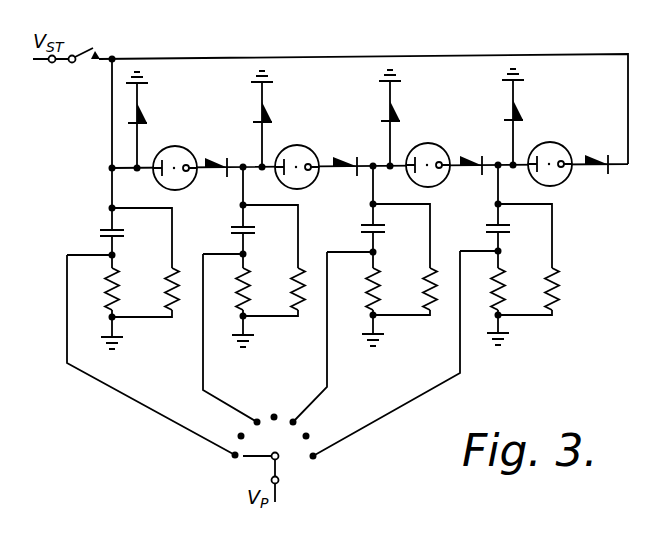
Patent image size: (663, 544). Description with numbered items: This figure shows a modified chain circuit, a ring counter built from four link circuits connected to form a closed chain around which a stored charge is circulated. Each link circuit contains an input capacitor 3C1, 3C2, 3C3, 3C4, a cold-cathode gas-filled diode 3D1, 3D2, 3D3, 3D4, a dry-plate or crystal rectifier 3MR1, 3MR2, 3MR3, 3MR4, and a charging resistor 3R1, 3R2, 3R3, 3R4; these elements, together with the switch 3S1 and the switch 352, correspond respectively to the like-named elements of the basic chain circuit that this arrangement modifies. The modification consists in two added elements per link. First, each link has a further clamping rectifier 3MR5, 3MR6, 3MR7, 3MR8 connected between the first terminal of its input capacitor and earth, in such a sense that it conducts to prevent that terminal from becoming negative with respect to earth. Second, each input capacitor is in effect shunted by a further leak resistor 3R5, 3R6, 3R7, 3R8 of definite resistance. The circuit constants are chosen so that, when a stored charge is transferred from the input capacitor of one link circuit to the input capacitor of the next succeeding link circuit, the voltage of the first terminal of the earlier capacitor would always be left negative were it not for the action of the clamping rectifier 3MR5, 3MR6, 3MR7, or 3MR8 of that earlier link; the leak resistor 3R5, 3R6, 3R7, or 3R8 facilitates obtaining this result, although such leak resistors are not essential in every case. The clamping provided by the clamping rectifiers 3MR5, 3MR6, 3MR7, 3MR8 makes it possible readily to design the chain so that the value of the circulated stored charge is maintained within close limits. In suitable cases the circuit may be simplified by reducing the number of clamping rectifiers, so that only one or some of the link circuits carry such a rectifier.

The switch 3S1 is at (74, 45).
The dry-plate or crystal rectifier 3MR1 is at (221, 179).
The dry-plate or crystal rectifier 3MR2 is at (348, 177).
The dry-plate or crystal rectifier 3MR3 is at (474, 176).
The dry-plate or crystal rectifier 3MR4 is at (600, 175).
The clamping rectifier 3MR5 is at (163, 120).
The clamping rectifier 3MR6 is at (289, 119).
The clamping rectifier 3MR7 is at (416, 118).
The clamping rectifier 3MR8 is at (540, 117).
The cold-cathode gas-filled diode 3D1 is at (175, 159).
The cold-cathode gas-filled diode 3D2 is at (297, 158).
The cold-cathode gas-filled diode 3D3 is at (428, 156).
The cold-cathode gas-filled diode 3D4 is at (550, 155).
The input capacitor 3C1 is at (134, 236).
The input capacitor 3C2 is at (262, 234).
The input capacitor 3C3 is at (392, 232).
The input capacitor 3C4 is at (517, 231).
The charging resistor 3R1 is at (96, 289).
The charging resistor 3R2 is at (228, 289).
The charging resistor 3R3 is at (355, 289).
The charging resistor 3R4 is at (483, 289).
The leak resistor 3R5 is at (154, 289).
The leak resistor 3R6 is at (281, 289).
The leak resistor 3R7 is at (412, 289).
The leak resistor 3R8 is at (534, 289).
The switch 352 is at (256, 437).